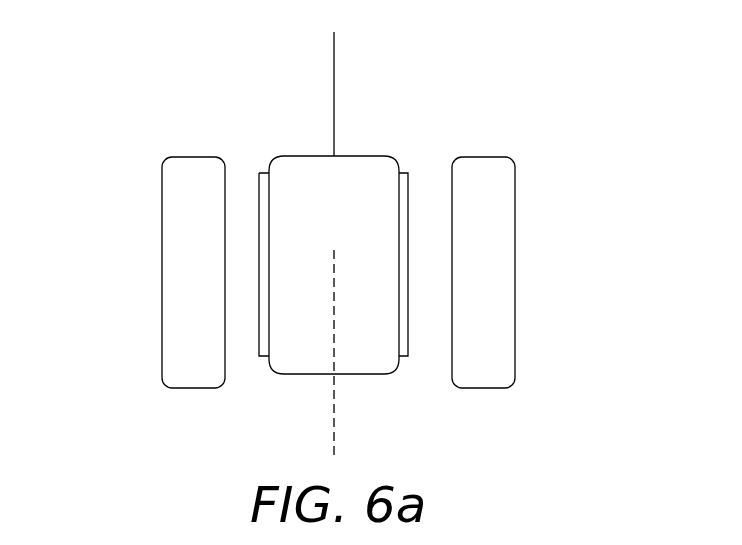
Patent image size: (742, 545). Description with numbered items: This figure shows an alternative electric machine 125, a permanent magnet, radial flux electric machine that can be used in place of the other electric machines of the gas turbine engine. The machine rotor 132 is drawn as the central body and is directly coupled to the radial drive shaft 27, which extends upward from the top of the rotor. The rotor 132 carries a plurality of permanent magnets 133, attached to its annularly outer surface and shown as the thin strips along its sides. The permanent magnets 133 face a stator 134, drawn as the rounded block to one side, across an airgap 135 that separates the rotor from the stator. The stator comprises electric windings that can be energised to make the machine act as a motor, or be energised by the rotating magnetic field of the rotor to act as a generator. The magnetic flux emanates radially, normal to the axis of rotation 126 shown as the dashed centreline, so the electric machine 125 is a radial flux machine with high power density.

The electric machine 125 is at (248, 121).
The radial drive shaft 27 is at (334, 44).
The machine rotor 132 is at (335, 155).
The permanent magnets 133 is at (263, 357).
The axis of rotation 126 is at (334, 428).
The airgap 135 is at (238, 258).
The stator 134 is at (515, 230).